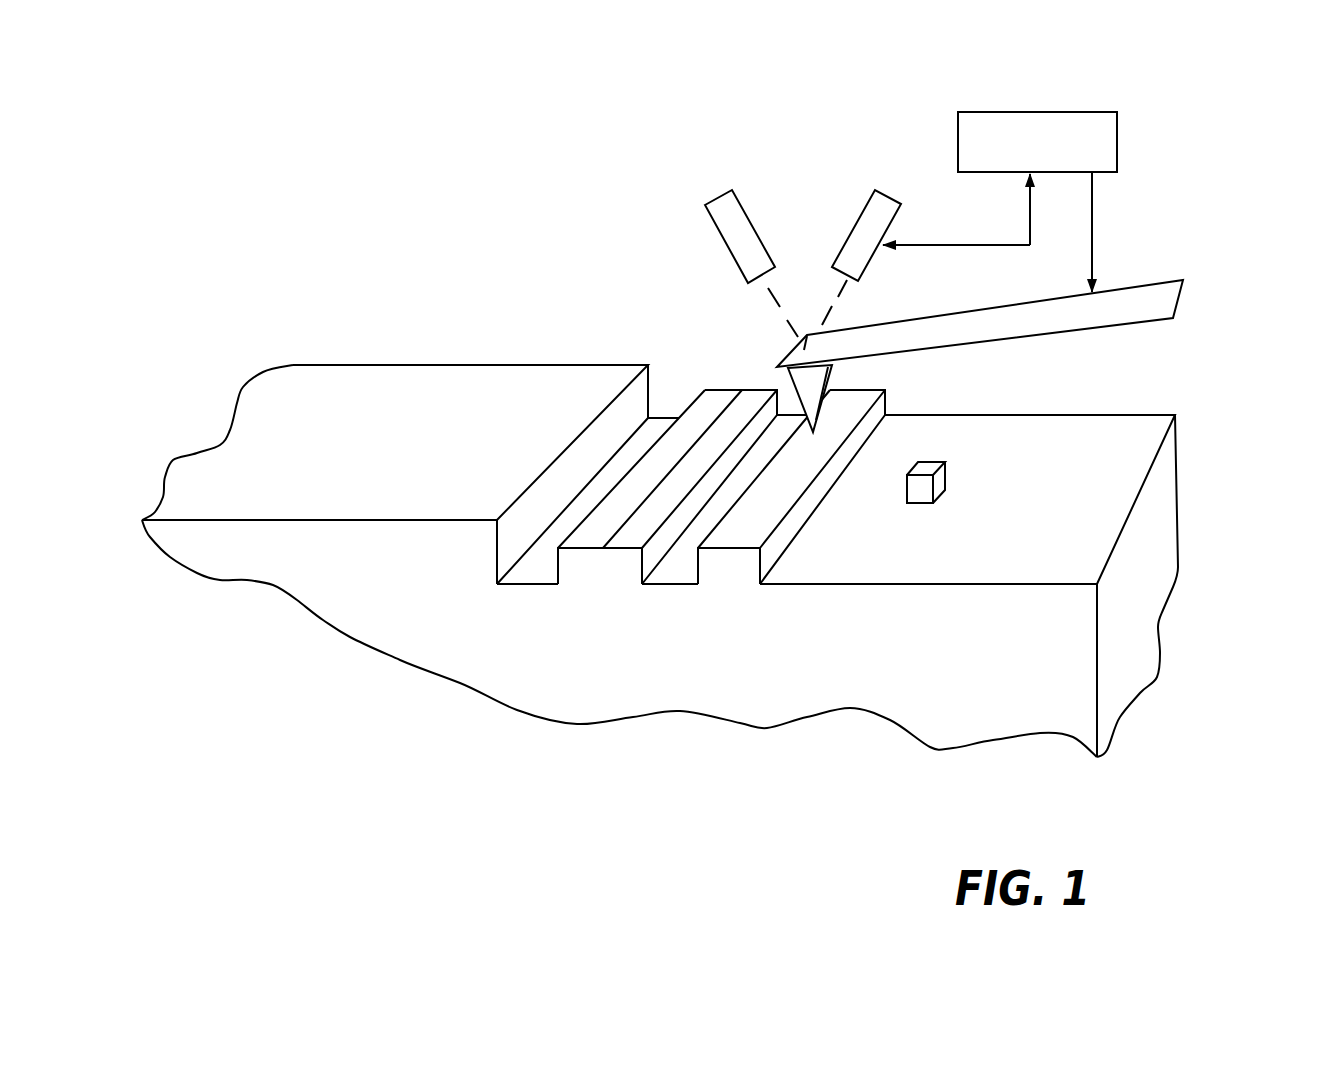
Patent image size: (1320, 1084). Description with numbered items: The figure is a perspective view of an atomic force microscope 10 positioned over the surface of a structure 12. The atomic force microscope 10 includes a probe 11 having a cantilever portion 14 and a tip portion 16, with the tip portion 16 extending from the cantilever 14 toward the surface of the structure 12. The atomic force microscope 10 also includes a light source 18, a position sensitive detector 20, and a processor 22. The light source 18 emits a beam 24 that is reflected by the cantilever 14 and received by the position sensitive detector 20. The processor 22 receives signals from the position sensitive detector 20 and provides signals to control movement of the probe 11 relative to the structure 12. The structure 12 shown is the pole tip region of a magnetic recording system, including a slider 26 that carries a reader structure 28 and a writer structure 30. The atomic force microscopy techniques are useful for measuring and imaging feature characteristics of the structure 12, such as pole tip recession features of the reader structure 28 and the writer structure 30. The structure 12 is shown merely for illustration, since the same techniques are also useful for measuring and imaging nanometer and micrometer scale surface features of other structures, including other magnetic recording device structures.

The atomic force microscope 10 is at (836, 144).
The probe 11 is at (1188, 311).
The structure 12 is at (1147, 637).
The cantilever portion 14 is at (1157, 302).
The tip portion 16 is at (810, 382).
The light source 18 is at (738, 220).
The position sensitive detector 20 is at (892, 210).
The processor 22 is at (1110, 117).
The beam 24 is at (781, 304).
The slider 26 is at (450, 388).
The reader structure 28 is at (712, 408).
The writer structure 30 is at (945, 467).